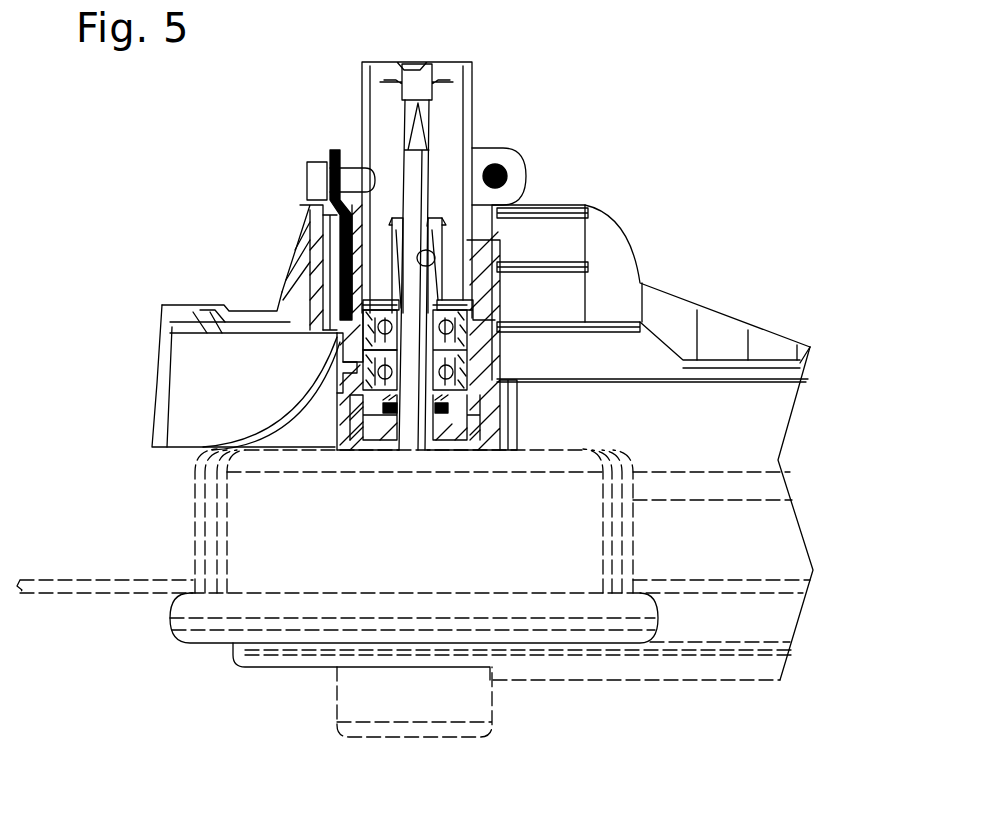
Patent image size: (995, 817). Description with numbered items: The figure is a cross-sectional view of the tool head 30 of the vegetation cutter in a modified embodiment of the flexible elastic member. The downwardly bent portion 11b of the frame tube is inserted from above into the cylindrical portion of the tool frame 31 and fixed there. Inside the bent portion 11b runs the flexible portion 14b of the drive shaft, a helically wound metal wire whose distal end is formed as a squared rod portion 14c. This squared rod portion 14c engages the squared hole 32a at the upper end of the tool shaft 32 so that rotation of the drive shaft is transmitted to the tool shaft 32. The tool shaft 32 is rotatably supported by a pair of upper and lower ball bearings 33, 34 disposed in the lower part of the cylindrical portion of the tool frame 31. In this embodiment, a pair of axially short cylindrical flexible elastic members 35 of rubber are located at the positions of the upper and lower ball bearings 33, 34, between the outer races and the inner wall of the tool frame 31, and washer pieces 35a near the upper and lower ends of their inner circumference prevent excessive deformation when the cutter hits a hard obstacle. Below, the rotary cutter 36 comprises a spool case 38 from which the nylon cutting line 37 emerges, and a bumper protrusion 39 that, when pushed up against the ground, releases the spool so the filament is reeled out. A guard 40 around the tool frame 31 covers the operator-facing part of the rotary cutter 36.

The bent portion 11b is at (364, 112).
The flexible portion 14b is at (433, 97).
The squared rod portion 14c is at (418, 235).
The tool head 30 is at (578, 153).
The tool frame 31 is at (341, 252).
The tool shaft 32 is at (441, 240).
The squared hole 32a is at (438, 262).
The upper ball bearing 33 is at (363, 332).
The lower ball bearing 34 is at (357, 369).
The flexible elastic member 35 is at (470, 320).
The washer piece 35a is at (467, 314).
The rotary cutter 36 is at (173, 642).
The cutting line 37 is at (118, 594).
The spool case 38 is at (193, 528).
The bumper protrusion 39 is at (336, 688).
The guard 40 is at (668, 305).